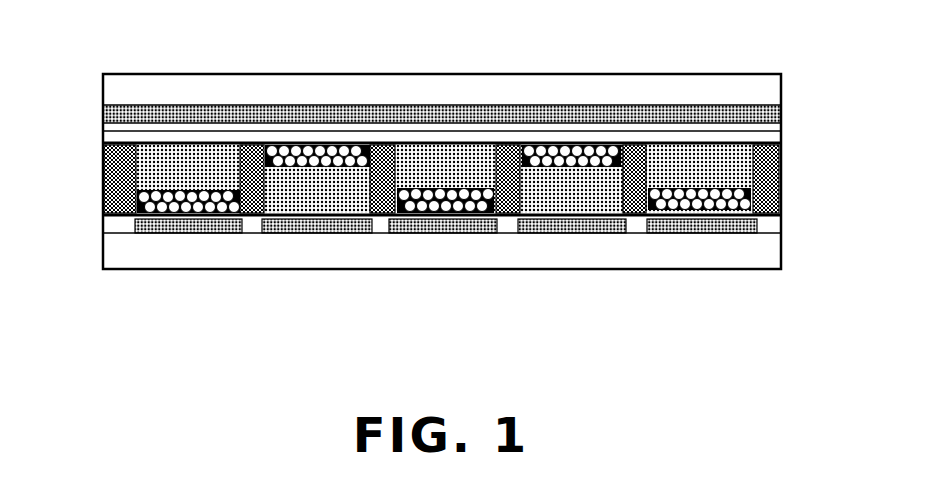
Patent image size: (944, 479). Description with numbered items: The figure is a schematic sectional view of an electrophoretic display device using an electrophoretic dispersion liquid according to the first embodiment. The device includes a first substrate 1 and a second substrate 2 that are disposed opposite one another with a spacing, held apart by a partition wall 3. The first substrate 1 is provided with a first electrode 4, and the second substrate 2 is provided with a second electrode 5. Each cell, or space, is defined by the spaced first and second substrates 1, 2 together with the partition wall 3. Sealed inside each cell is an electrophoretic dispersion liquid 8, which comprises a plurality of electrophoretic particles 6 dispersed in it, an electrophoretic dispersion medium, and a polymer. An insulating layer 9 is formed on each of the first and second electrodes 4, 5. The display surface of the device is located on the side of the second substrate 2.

The first substrate 1 is at (285, 270).
The second substrate 2 is at (745, 74).
The partition wall 3 is at (110, 186).
The first electrode 4 is at (180, 234).
The second electrode 5 is at (782, 110).
The electrophoretic particles 6 is at (583, 150).
The electrophoretic dispersion liquid 8 is at (452, 157).
The insulating layer 9 is at (778, 132).